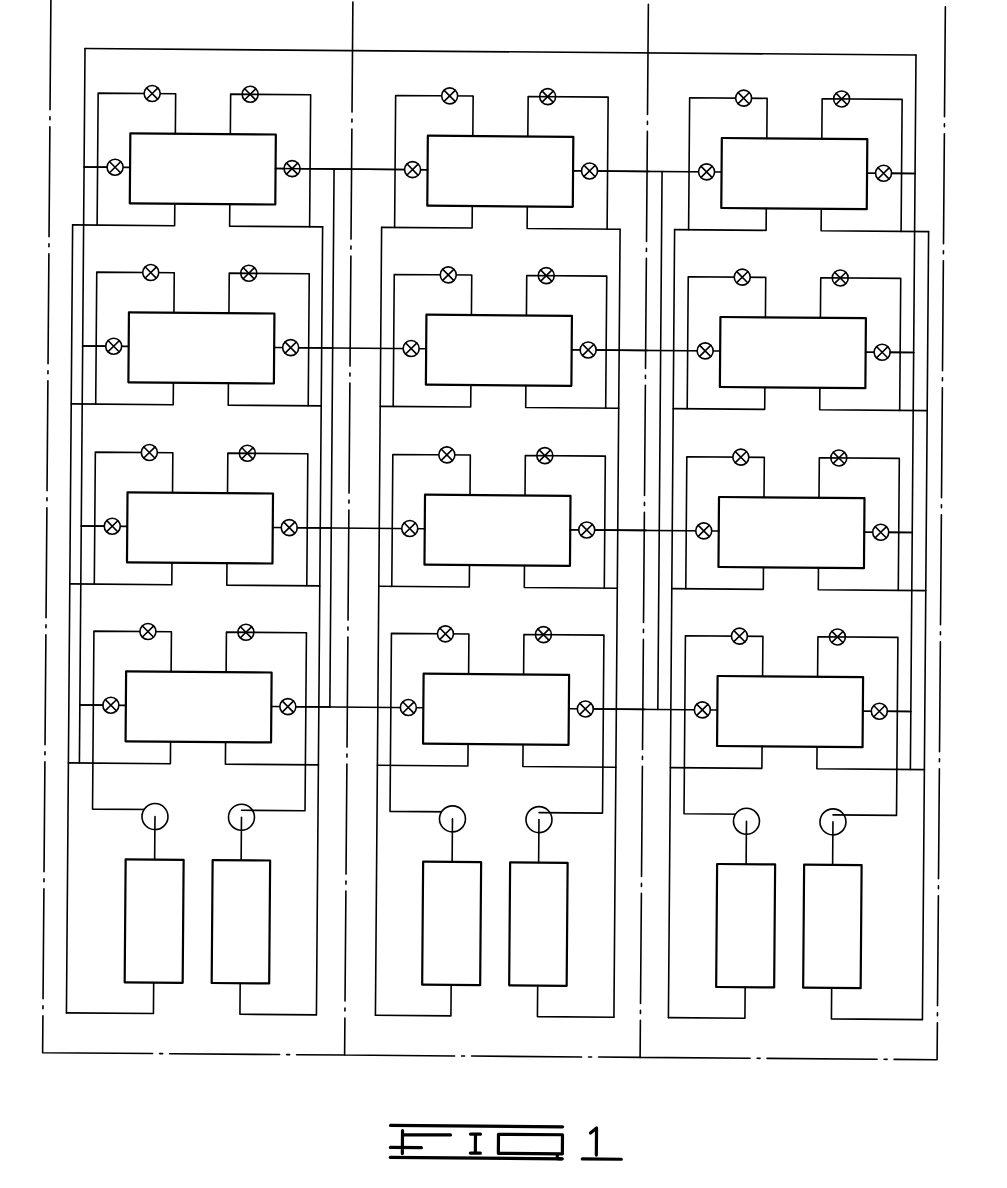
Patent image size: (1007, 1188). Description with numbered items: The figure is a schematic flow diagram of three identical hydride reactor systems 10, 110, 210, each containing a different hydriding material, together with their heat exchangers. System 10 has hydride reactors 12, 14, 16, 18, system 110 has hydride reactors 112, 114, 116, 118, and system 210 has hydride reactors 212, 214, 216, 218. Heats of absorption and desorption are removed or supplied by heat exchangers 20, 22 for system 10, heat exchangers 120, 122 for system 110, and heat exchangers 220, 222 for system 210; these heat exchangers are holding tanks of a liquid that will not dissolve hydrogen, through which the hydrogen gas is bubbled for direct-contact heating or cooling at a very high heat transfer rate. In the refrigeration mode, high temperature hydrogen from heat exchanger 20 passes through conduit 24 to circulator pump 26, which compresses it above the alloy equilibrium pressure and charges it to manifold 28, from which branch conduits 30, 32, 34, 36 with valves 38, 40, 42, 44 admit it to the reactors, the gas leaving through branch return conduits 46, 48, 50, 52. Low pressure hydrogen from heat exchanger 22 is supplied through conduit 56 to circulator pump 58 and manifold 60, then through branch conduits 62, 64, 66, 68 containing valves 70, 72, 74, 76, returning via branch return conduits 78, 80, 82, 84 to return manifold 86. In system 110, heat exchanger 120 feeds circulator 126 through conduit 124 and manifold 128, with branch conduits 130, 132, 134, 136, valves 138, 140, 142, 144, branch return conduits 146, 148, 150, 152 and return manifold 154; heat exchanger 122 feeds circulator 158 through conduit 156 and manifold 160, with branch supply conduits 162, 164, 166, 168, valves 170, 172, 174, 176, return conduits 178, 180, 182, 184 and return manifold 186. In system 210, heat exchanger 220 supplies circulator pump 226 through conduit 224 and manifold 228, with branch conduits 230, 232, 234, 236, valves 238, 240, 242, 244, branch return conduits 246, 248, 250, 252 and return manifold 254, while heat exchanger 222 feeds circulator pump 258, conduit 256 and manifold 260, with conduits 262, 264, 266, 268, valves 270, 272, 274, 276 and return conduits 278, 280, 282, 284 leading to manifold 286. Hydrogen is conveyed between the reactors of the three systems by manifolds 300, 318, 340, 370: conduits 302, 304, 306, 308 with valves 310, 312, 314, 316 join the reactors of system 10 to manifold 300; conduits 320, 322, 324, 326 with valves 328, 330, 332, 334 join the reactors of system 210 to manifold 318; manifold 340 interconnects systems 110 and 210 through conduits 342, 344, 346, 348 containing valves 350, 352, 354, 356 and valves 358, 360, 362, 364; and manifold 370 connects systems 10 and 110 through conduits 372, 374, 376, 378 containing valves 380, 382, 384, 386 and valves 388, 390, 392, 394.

The hydride reactor system 10 is at (201, 1055).
The hydride reactor system 110 is at (458, 1055).
The hydride reactor system 210 is at (769, 1055).
The hydride reactor 12 is at (256, 133).
The hydride reactor 14 is at (202, 311).
The hydride reactor 16 is at (200, 491).
The hydride reactor 18 is at (200, 670).
The heat exchanger 20 is at (131, 922).
The heat exchanger 22 is at (277, 927).
The conduit 24 is at (162, 841).
The circulator pump 26 is at (157, 803).
The manifold 28 is at (100, 788).
The branch conduit 30 is at (127, 81).
The branch conduit 32 is at (122, 270).
The branch conduit 34 is at (120, 450).
The branch conduit 36 is at (119, 629).
The valve 38 is at (157, 87).
The valve 40 is at (158, 266).
The valve 42 is at (154, 444).
The valve 44 is at (155, 627).
The branch return conduit 46 is at (177, 227).
The branch return conduit 48 is at (177, 399).
The branch return conduit 50 is at (177, 579).
The branch return conduit 52 is at (177, 756).
The conduit 56 is at (249, 844).
The circulator pump 58 is at (242, 801).
The manifold 60 is at (289, 811).
The branch conduit 62 is at (288, 91).
The branch conduit 64 is at (297, 269).
The branch conduit 66 is at (298, 451).
The branch conduit 68 is at (298, 633).
The valve 70 is at (258, 80).
The valve 72 is at (257, 266).
The valve 74 is at (247, 448).
The valve 76 is at (249, 628).
The branch return conduit 78 is at (252, 228).
The branch return conduit 80 is at (252, 407).
The branch return conduit 82 is at (255, 587).
The branch return conduit 84 is at (260, 768).
The return manifold 86 is at (323, 915).
The hydride reactor 112 is at (489, 132).
The hydride reactor 114 is at (490, 311).
The hydride reactor 116 is at (491, 491).
The hydride reactor 118 is at (493, 670).
The heat exchanger 120 is at (428, 920).
The heat exchanger 122 is at (575, 950).
The conduit 124 is at (460, 842).
The circulator 126 is at (453, 803).
The manifold 128 is at (397, 789).
The branch conduit 130 is at (412, 91).
The branch conduit 132 is at (411, 270).
The branch conduit 134 is at (412, 450).
The branch conduit 136 is at (413, 629).
The valve 138 is at (451, 85).
The valve 140 is at (454, 264).
The valve 142 is at (454, 444).
The valve 144 is at (455, 624).
The branch return conduit 146 is at (474, 218).
The branch return conduit 148 is at (474, 398).
The branch return conduit 150 is at (474, 578).
The branch return conduit 152 is at (474, 757).
The return manifold 154 is at (384, 846).
The conduit 156 is at (546, 846).
The circulator 158 is at (541, 804).
The manifold 160 is at (574, 811).
The branch supply conduit 162 is at (591, 85).
The branch supply conduit 164 is at (591, 269).
The branch supply conduit 166 is at (592, 451).
The branch supply conduit 168 is at (594, 631).
The valve 170 is at (543, 90).
The valve 172 is at (543, 267).
The valve 174 is at (544, 445).
The valve 176 is at (546, 624).
The return conduit 178 is at (572, 227).
The return conduit 180 is at (573, 406).
The return conduit 182 is at (574, 586).
The return conduit 184 is at (539, 767).
The return manifold 186 is at (620, 866).
The hydride reactor 212 is at (779, 132).
The hydride reactor 214 is at (780, 311).
The hydride reactor 216 is at (781, 491).
The hydride reactor 218 is at (783, 670).
The heat exchanger 220 is at (722, 916).
The heat exchanger 222 is at (869, 949).
The conduit 224 is at (754, 840).
The circulator pump 226 is at (748, 803).
The manifold 228 is at (691, 782).
The branch conduit 230 is at (700, 91).
The branch conduit 232 is at (706, 270).
The branch conduit 234 is at (707, 450).
The branch conduit 236 is at (708, 629).
The valve 238 is at (746, 85).
The valve 240 is at (738, 265).
The valve 242 is at (739, 445).
The valve 244 is at (740, 625).
The branch return conduit 246 is at (768, 218).
The branch return conduit 248 is at (768, 399).
The branch return conduit 250 is at (768, 579).
The branch return conduit 252 is at (768, 756).
The return manifold 254 is at (677, 843).
The conduit 256 is at (840, 846).
The circulator pump 258 is at (826, 809).
The manifold 260 is at (855, 813).
The conduit 262 is at (881, 83).
The conduit 264 is at (883, 271).
The conduit 266 is at (875, 451).
The conduit 268 is at (877, 631).
The valve 270 is at (836, 89).
The valve 272 is at (830, 269).
The valve 274 is at (831, 449).
The valve 276 is at (833, 629).
The conduit 278 is at (864, 229).
The conduit 280 is at (861, 408).
The conduit 282 is at (862, 588).
The conduit 284 is at (834, 767).
The manifold 286 is at (929, 869).
The manifold 300 is at (86, 474).
The conduit 302 is at (113, 159).
The conduit 304 is at (112, 338).
The conduit 306 is at (113, 518).
The conduit 308 is at (112, 697).
The valve 310 is at (114, 175).
The valve 312 is at (114, 354).
The valve 314 is at (114, 534).
The valve 316 is at (114, 713).
The manifold 318 is at (915, 464).
The conduit 320 is at (908, 174).
The conduit 322 is at (908, 352).
The conduit 324 is at (908, 532).
The conduit 326 is at (907, 711).
The valve 328 is at (891, 159).
The valve 330 is at (891, 338).
The valve 332 is at (891, 518).
The valve 334 is at (891, 697).
The manifold 340 is at (664, 175).
The conduit 342 is at (616, 174).
The conduit 344 is at (616, 352).
The conduit 346 is at (617, 532).
The conduit 348 is at (617, 711).
The valve 350 is at (597, 159).
The valve 352 is at (597, 338).
The valve 354 is at (597, 518).
The valve 356 is at (597, 697).
The valve 358 is at (703, 159).
The valve 360 is at (703, 338).
The valve 362 is at (703, 518).
The valve 364 is at (703, 697).
The manifold 370 is at (336, 187).
The conduit 372 is at (313, 165).
The conduit 374 is at (322, 352).
The conduit 376 is at (323, 532).
The conduit 378 is at (323, 711).
The valve 380 is at (299, 159).
The valve 382 is at (299, 338).
The valve 384 is at (299, 518).
The valve 386 is at (299, 697).
The valve 388 is at (409, 159).
The valve 390 is at (409, 338).
The valve 392 is at (409, 518).
The valve 394 is at (409, 697).